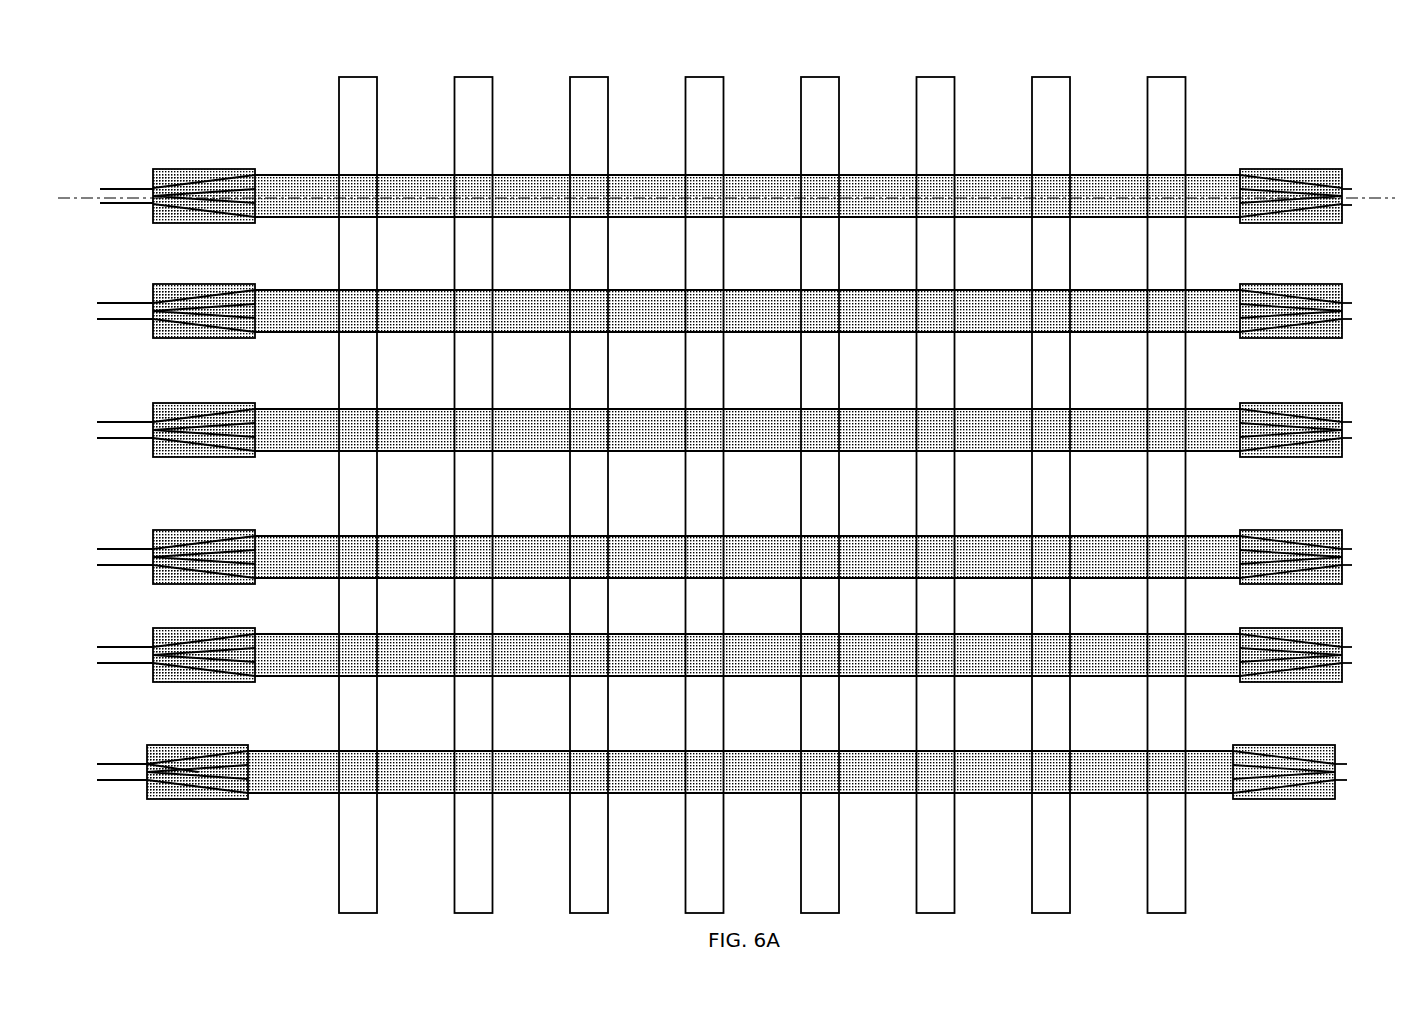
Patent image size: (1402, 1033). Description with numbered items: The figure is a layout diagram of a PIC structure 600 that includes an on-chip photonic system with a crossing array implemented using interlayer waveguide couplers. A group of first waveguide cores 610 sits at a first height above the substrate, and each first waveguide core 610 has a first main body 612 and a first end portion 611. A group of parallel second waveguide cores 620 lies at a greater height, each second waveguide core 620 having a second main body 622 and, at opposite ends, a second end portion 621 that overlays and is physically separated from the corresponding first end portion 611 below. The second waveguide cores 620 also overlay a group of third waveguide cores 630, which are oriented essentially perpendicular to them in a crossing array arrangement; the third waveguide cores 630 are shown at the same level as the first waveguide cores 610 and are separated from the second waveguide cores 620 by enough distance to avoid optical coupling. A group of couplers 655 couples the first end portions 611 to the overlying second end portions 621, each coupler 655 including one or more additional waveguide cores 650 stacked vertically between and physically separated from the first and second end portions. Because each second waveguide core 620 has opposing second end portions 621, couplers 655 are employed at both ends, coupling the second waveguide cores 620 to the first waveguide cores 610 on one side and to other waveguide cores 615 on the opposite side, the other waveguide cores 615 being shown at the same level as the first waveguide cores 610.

The PIC structure 600 is at (1262, 89).
The first waveguide cores 610 is at (139, 487).
The first end portion 611 is at (196, 780).
The first main body 612 is at (102, 762).
The other waveguide cores 615 is at (1350, 186).
The second waveguide cores 620 is at (744, 499).
The second end portion 621 is at (217, 790).
The second main body 622 is at (283, 744).
The third waveguide cores 630 is at (355, 76).
The additional waveguide cores 650 is at (232, 168).
The couplers 655 is at (1300, 168).